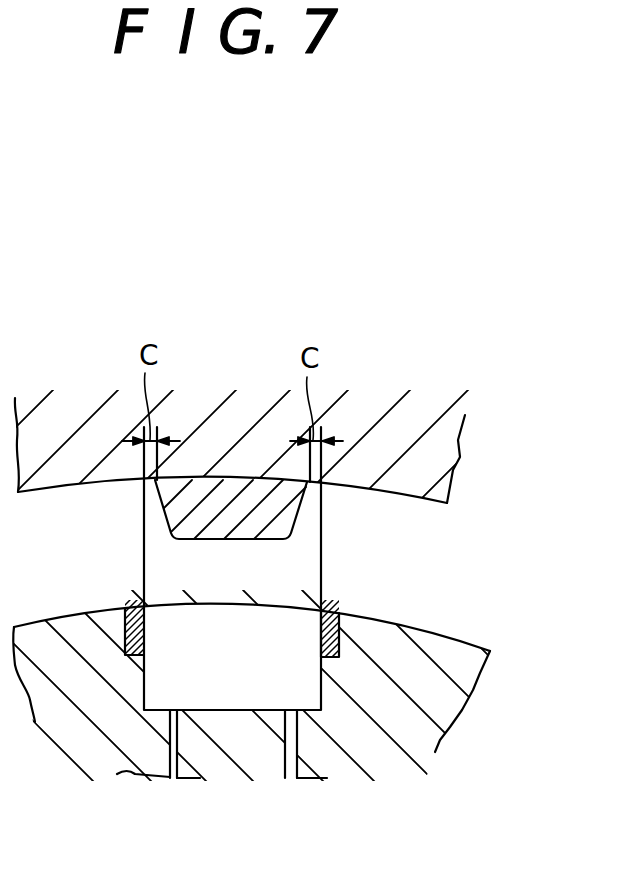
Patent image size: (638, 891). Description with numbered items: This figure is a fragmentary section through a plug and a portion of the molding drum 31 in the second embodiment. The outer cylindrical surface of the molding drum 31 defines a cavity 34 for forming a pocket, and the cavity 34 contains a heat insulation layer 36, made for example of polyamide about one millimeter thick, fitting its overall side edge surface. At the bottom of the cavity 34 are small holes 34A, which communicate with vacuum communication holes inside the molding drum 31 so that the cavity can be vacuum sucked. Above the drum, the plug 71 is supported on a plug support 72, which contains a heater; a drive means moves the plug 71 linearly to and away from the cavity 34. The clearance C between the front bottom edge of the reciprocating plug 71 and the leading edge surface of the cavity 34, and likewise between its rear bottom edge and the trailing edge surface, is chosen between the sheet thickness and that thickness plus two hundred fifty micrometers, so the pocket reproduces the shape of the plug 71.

The plug support 72 is at (443, 452).
The plug 71 is at (292, 518).
The cavity 34 is at (144, 672).
The small holes 34A is at (291, 710).
The heat insulation layer 36 is at (135, 610).
The molding drum 31 is at (442, 718).